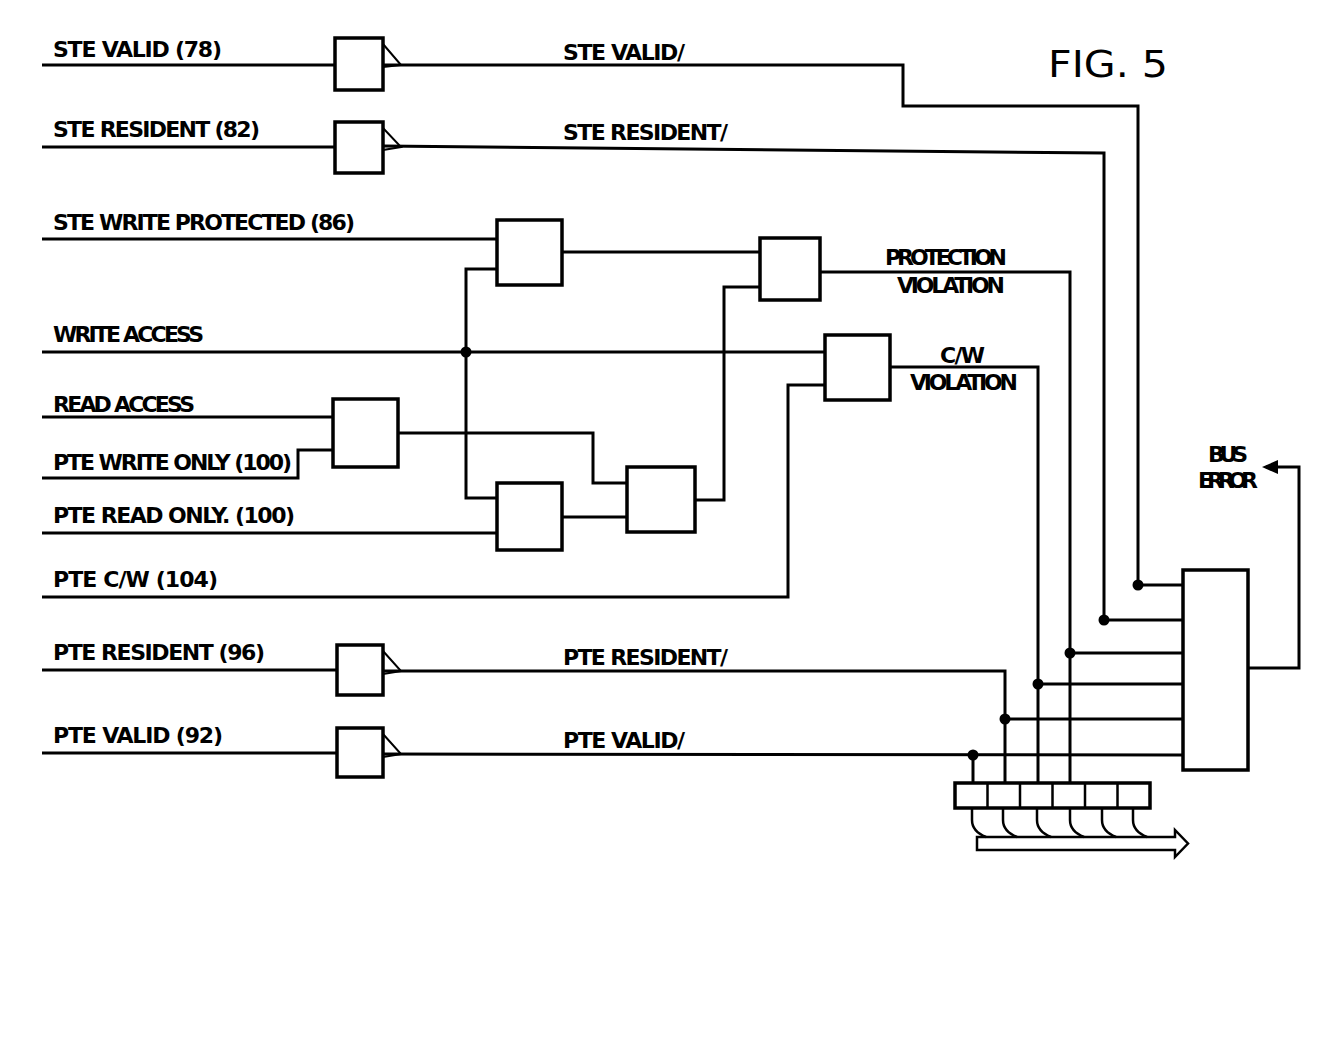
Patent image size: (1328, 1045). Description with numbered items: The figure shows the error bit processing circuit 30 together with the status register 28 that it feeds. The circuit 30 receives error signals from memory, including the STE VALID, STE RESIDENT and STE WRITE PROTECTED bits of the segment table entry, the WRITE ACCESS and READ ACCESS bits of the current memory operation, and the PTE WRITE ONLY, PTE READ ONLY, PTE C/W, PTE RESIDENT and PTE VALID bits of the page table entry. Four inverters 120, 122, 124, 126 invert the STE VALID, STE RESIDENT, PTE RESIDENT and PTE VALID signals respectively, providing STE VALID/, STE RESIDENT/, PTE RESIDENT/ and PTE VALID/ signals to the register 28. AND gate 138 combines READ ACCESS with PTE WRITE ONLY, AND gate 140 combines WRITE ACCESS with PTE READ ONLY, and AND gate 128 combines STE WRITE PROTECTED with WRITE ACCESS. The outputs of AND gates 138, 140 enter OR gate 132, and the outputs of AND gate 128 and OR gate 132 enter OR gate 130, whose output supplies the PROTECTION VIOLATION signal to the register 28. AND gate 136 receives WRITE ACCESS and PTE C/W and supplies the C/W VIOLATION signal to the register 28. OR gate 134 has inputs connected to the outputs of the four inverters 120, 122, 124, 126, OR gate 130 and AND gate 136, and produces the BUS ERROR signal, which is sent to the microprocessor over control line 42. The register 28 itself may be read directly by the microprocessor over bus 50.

The inverter 120 is at (386, 46).
The inverter 122 is at (386, 130).
The inverter 124 is at (386, 652).
The inverter 126 is at (386, 735).
The AND gate 128 is at (560, 222).
The OR gate 130 is at (778, 238).
The OR gate 132 is at (676, 532).
The OR gate 134 is at (1213, 572).
The AND gate 136 is at (870, 400).
The AND gate 138 is at (368, 399).
The AND gate 140 is at (500, 550).
The status register 28 is at (953, 793).
The error bit processing circuit 30 is at (558, 770).
The control line 42 is at (1278, 668).
The bus 50 is at (977, 843).